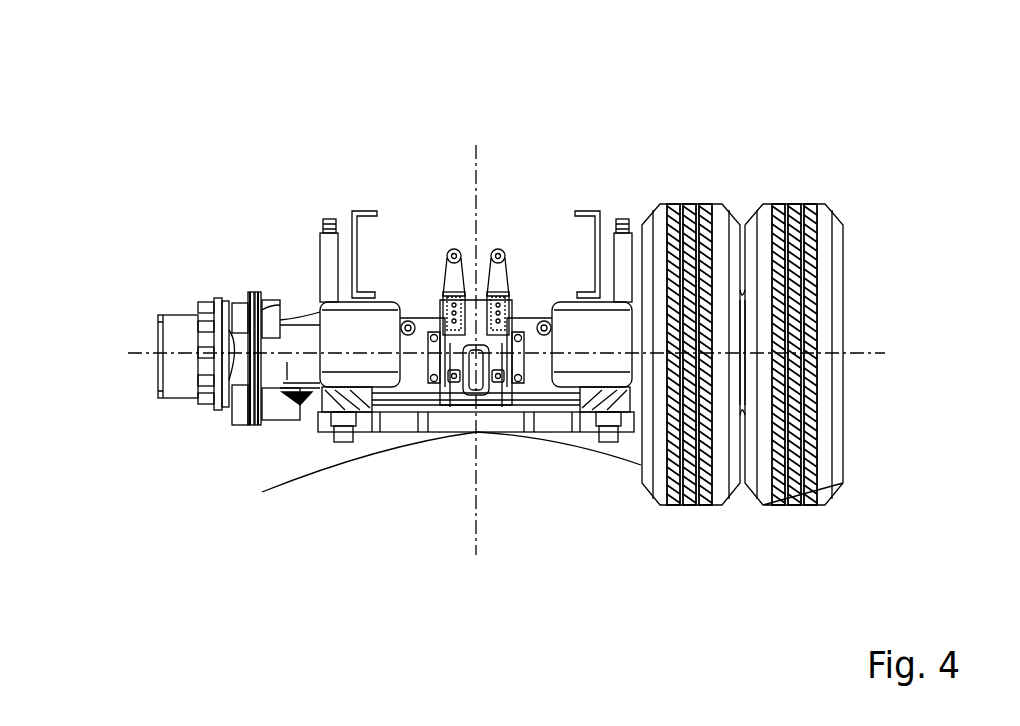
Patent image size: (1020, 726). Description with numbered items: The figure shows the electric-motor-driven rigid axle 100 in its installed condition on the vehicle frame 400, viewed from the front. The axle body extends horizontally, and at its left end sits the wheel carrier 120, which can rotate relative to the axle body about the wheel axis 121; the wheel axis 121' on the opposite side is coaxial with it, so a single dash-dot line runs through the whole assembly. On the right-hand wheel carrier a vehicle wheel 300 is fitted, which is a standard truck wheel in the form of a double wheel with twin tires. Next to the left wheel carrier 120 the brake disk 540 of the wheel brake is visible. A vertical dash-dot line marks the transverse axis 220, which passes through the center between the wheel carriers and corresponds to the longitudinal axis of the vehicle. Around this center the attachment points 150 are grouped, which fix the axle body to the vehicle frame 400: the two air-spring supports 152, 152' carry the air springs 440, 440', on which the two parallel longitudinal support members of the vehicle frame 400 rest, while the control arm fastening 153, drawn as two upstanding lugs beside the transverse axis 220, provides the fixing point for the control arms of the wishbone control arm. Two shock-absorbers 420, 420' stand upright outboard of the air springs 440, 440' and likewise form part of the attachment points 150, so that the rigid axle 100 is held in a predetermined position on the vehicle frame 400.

The rigid axle 100 is at (538, 302).
The wheel carrier 120 is at (178, 308).
The wheel axis 121 is at (272, 317).
The wheel axis 121' is at (730, 317).
The attachment points 150 is at (469, 339).
The air-spring support 152 is at (295, 517).
The air-spring support 152' is at (650, 517).
The control arm fastening 153 is at (455, 250).
The transverse axis 220 is at (475, 160).
The vehicle wheel 300 is at (722, 497).
The vehicle frame 400 is at (360, 215).
The shock-absorber 420 is at (305, 166).
The shock-absorber 420' is at (717, 166).
The air spring 440 is at (366, 475).
The air spring 440' is at (576, 475).
The brake disk 540 is at (252, 425).